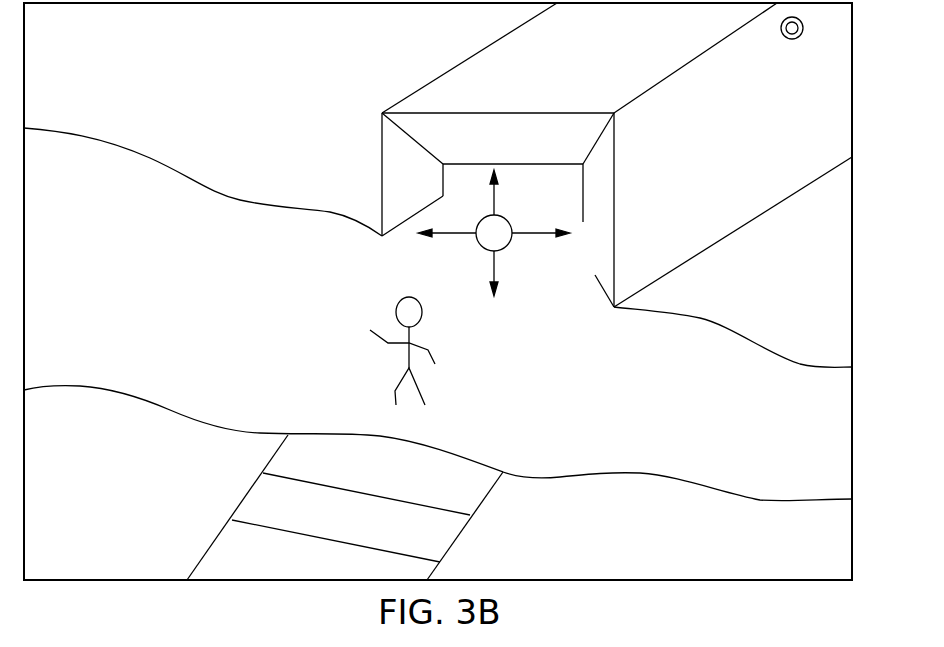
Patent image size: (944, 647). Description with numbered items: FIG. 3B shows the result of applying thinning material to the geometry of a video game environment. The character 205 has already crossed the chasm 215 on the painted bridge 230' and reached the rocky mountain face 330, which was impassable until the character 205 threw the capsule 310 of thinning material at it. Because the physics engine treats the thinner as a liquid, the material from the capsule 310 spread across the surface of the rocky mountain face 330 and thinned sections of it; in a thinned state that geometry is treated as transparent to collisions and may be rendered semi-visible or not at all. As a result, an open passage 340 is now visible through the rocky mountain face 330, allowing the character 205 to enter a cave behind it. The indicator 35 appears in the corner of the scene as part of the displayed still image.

The status indicator 35 is at (809, 58).
The character 205 is at (397, 352).
The chasm 215 is at (134, 506).
The painted bridge 230' is at (382, 507).
The capsule 310 is at (508, 243).
The rocky mountain face 330 is at (382, 148).
The open passage 340 is at (638, 182).